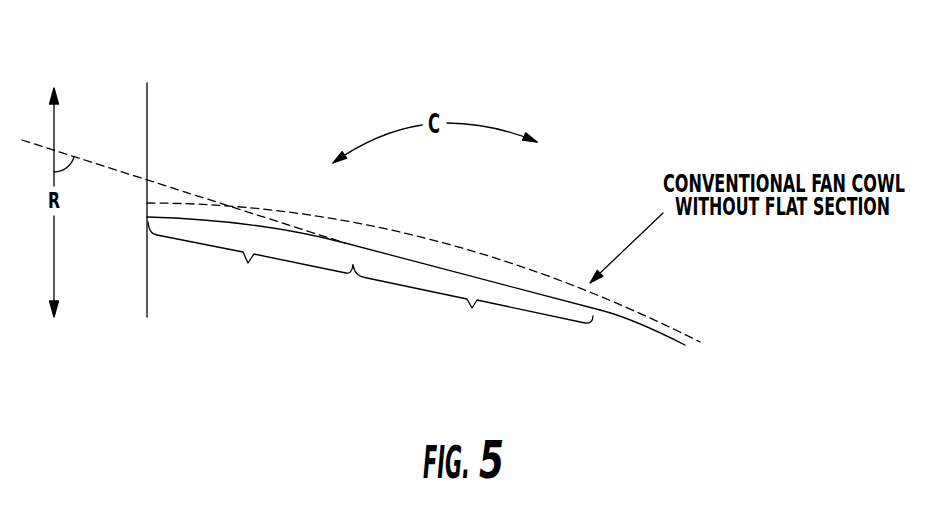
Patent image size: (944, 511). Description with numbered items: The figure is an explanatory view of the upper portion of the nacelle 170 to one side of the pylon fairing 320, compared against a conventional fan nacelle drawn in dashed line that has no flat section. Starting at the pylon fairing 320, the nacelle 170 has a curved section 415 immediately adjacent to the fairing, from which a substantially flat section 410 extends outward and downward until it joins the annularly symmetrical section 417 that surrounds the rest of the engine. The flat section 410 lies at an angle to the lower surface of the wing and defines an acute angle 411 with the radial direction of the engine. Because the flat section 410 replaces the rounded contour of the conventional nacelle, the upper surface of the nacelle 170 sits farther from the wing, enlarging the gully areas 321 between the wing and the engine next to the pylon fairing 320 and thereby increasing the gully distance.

The nacelle 170 is at (332, 300).
The pylon fairing 320 is at (147, 122).
The gully areas 321 is at (276, 138).
The flat section 410 is at (472, 295).
The acute angle 411 is at (58, 174).
The curved section 415 is at (250, 260).
The symmetrical section 417 is at (638, 325).